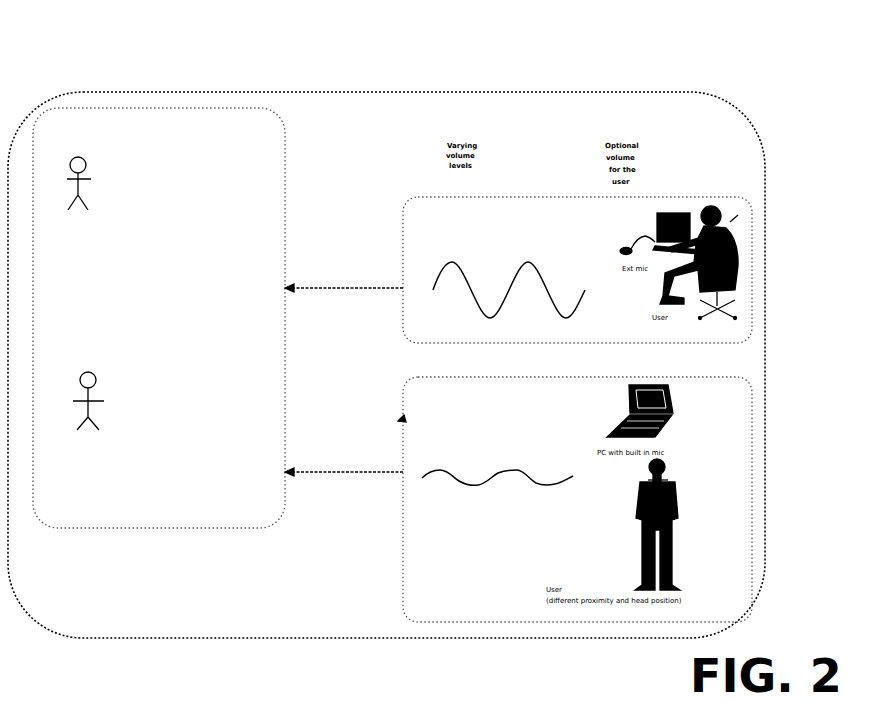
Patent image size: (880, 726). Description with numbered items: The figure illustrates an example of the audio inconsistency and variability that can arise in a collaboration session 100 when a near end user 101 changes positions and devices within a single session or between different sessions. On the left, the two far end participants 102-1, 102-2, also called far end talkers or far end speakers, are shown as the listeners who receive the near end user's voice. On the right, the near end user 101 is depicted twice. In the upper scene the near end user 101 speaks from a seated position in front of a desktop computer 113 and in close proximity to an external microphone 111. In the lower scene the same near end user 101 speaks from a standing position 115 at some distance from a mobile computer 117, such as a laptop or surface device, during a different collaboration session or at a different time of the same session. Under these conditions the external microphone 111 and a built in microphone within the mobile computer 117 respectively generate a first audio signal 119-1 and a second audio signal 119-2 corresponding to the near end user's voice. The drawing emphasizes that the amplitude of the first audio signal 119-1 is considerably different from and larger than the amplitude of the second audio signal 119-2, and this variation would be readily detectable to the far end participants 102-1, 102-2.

The collaboration session 100 is at (147, 52).
The near end user 101 is at (724, 227).
The first far end participant 102-1 is at (80, 179).
The second far end participant 102-2 is at (82, 373).
The external microphone 111 is at (619, 250).
The desktop computer 113 is at (675, 212).
The standing position 115 is at (680, 488).
The mobile computer 117 is at (657, 384).
The first audio signal 119-1 is at (498, 311).
The second audio signal 119-2 is at (502, 476).